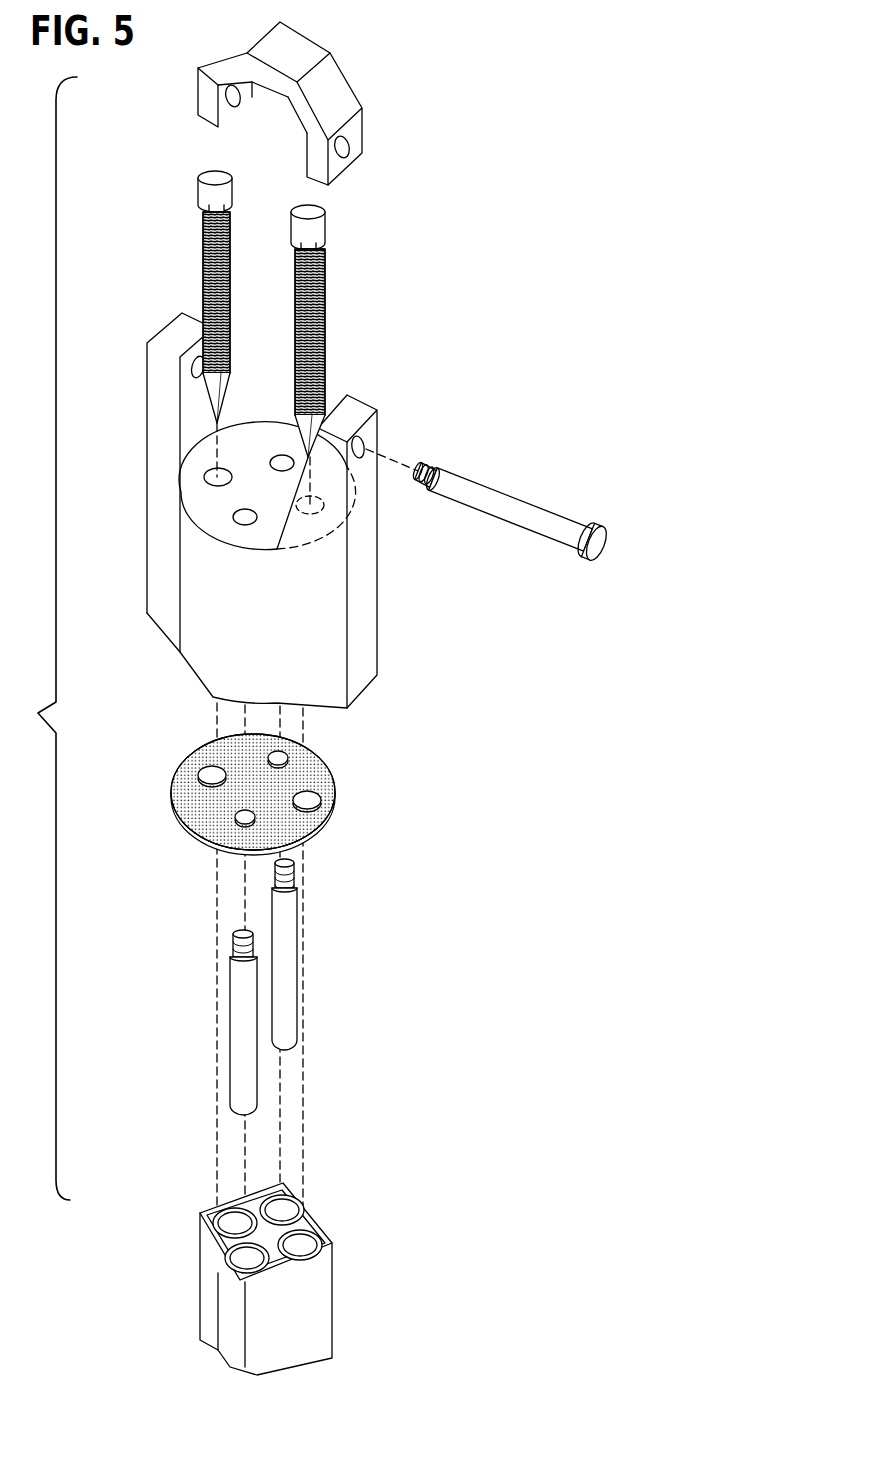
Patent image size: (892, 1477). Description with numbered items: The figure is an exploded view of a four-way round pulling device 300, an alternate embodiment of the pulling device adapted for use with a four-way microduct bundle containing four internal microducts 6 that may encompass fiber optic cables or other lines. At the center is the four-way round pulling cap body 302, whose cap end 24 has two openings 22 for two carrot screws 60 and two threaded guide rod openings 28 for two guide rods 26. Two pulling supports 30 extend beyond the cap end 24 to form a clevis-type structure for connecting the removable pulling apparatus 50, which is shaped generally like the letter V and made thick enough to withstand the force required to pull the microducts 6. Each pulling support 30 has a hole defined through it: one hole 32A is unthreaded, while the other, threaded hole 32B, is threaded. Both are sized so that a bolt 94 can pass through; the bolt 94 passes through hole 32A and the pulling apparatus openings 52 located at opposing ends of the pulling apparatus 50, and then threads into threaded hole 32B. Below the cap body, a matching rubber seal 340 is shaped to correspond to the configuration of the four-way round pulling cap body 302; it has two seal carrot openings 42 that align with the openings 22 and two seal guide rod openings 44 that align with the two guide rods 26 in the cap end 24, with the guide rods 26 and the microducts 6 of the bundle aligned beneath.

The 4-way round pulling device 300 is at (507, 209).
The pulling apparatus 50 is at (300, 48).
The pulling apparatus openings 52 is at (238, 99).
The carrot screws 60 is at (204, 222).
The pulling support 30 is at (158, 428).
The 4-way round pulling cap body 302 is at (315, 655).
The hole 32A is at (364, 444).
The threaded hole 32B is at (193, 363).
The cap end 24 is at (250, 450).
The openings 22 is at (205, 474).
The threaded guide rod openings 28 is at (258, 468).
The bolt 94 is at (520, 510).
The rubber seal 340 is at (323, 830).
The seal carrot openings 42 is at (202, 767).
The seal guide rod openings 44 is at (289, 758).
The guide rods 26 is at (288, 978).
The microducts 6 is at (212, 1212).